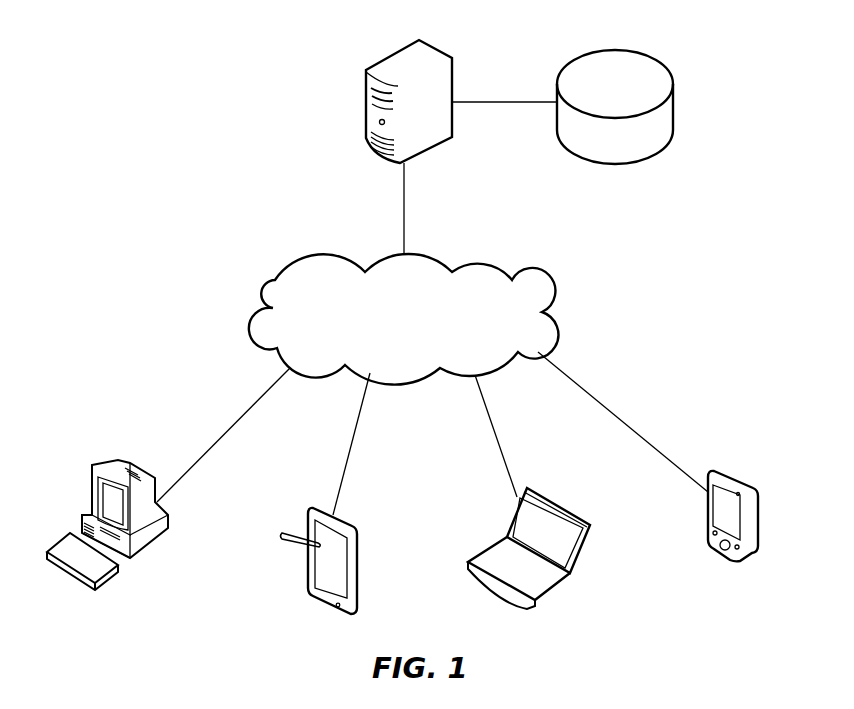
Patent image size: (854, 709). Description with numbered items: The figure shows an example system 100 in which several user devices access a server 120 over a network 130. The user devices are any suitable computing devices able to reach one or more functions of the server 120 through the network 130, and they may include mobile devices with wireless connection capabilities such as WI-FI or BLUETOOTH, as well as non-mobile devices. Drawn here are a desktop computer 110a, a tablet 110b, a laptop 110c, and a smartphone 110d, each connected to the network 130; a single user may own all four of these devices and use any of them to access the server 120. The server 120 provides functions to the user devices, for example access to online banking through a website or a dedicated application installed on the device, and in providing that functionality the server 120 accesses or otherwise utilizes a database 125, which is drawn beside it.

The system 100 is at (146, 88).
The desktop computer 110a is at (88, 454).
The tablet 110b is at (297, 493).
The laptop 110c is at (576, 489).
The smartphone 110d is at (743, 460).
The server 120 is at (360, 62).
The database 125 is at (672, 52).
The network 130 is at (432, 308).